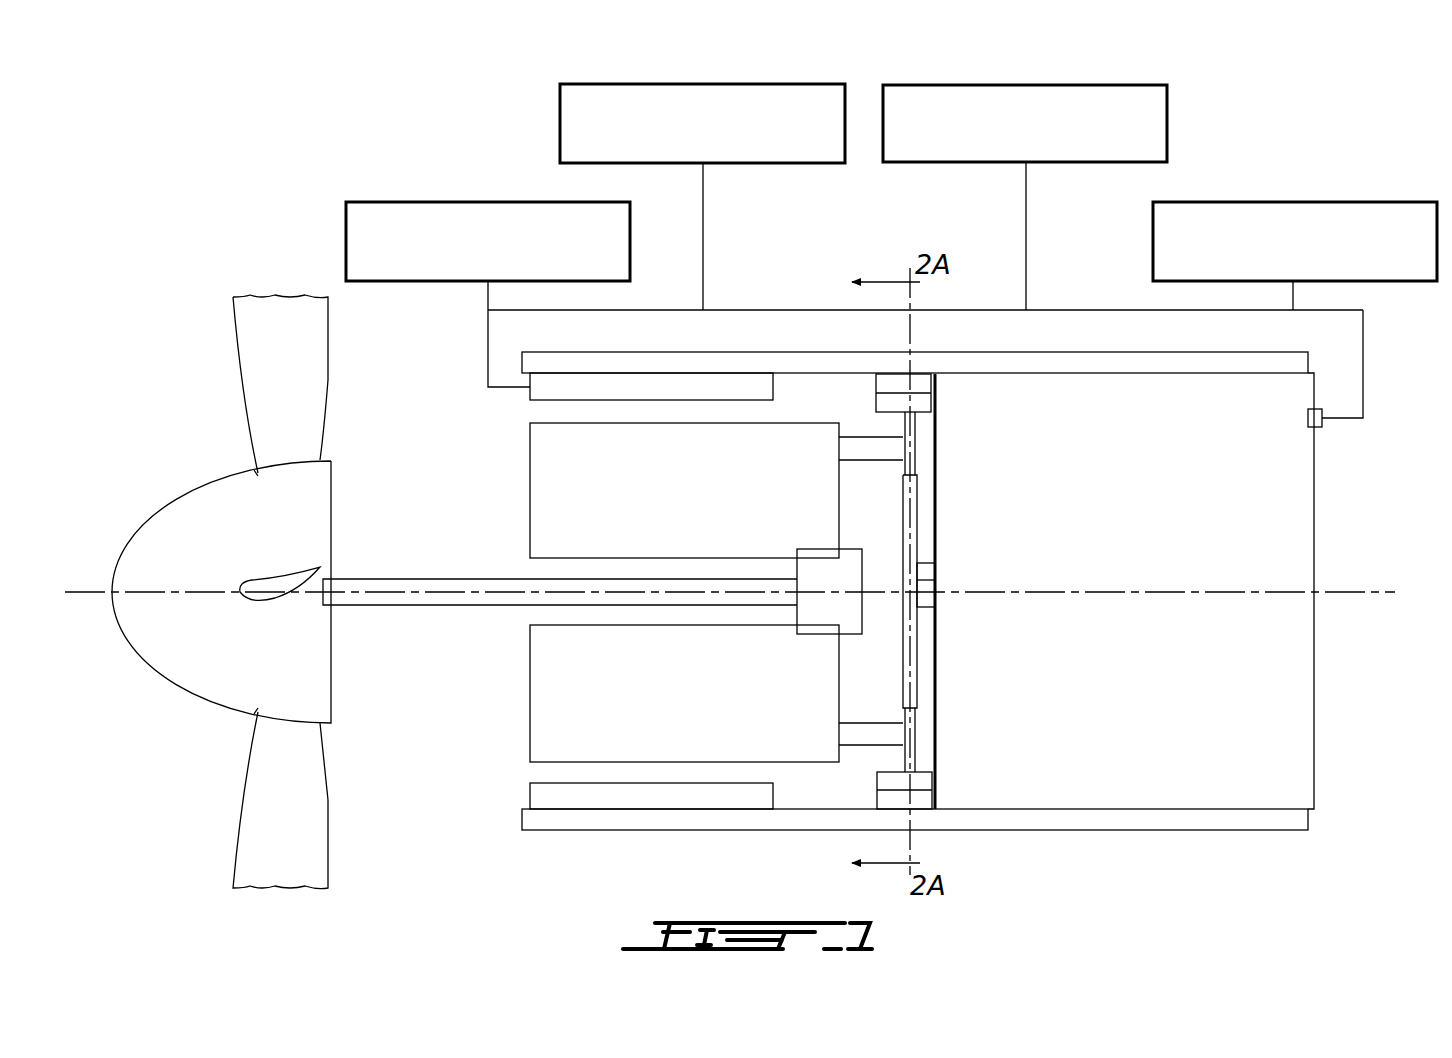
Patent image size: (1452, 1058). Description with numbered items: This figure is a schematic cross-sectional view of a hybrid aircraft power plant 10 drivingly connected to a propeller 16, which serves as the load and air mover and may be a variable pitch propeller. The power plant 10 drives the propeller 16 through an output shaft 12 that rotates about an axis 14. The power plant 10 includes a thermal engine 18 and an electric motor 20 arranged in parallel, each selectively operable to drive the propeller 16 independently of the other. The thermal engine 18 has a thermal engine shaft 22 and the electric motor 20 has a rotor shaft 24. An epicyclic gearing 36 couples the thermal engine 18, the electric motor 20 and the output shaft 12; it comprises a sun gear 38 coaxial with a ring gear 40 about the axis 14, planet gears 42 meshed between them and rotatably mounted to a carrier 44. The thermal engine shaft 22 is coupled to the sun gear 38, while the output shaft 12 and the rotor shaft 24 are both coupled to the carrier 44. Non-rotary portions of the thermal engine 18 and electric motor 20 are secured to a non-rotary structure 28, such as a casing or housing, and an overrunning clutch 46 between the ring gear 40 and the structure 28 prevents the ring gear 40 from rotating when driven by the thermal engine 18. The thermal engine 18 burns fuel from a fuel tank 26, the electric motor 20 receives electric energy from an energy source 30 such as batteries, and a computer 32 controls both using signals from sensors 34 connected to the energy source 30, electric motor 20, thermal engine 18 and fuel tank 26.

The power plant 10 is at (240, 155).
The output shaft 12 is at (406, 585).
The axis 14 is at (1358, 592).
The propeller 16 is at (270, 381).
The thermal engine 18 is at (1314, 448).
The electric motor 20 is at (530, 438).
The thermal engine shaft 22 is at (935, 591).
The rotor shaft 24 is at (820, 535).
The fuel tank 26 is at (1406, 202).
The structure 28 is at (706, 820).
The energy source 30 is at (372, 202).
The computer 32 is at (560, 125).
The sensors 34 is at (1167, 122).
The epicyclic gearing 36 is at (926, 485).
The sun gear 38 is at (915, 563).
The ring gear 40 is at (920, 404).
The planet gears 42 is at (910, 450).
The carrier 44 is at (872, 745).
The overrunning clutch 46 is at (900, 381).